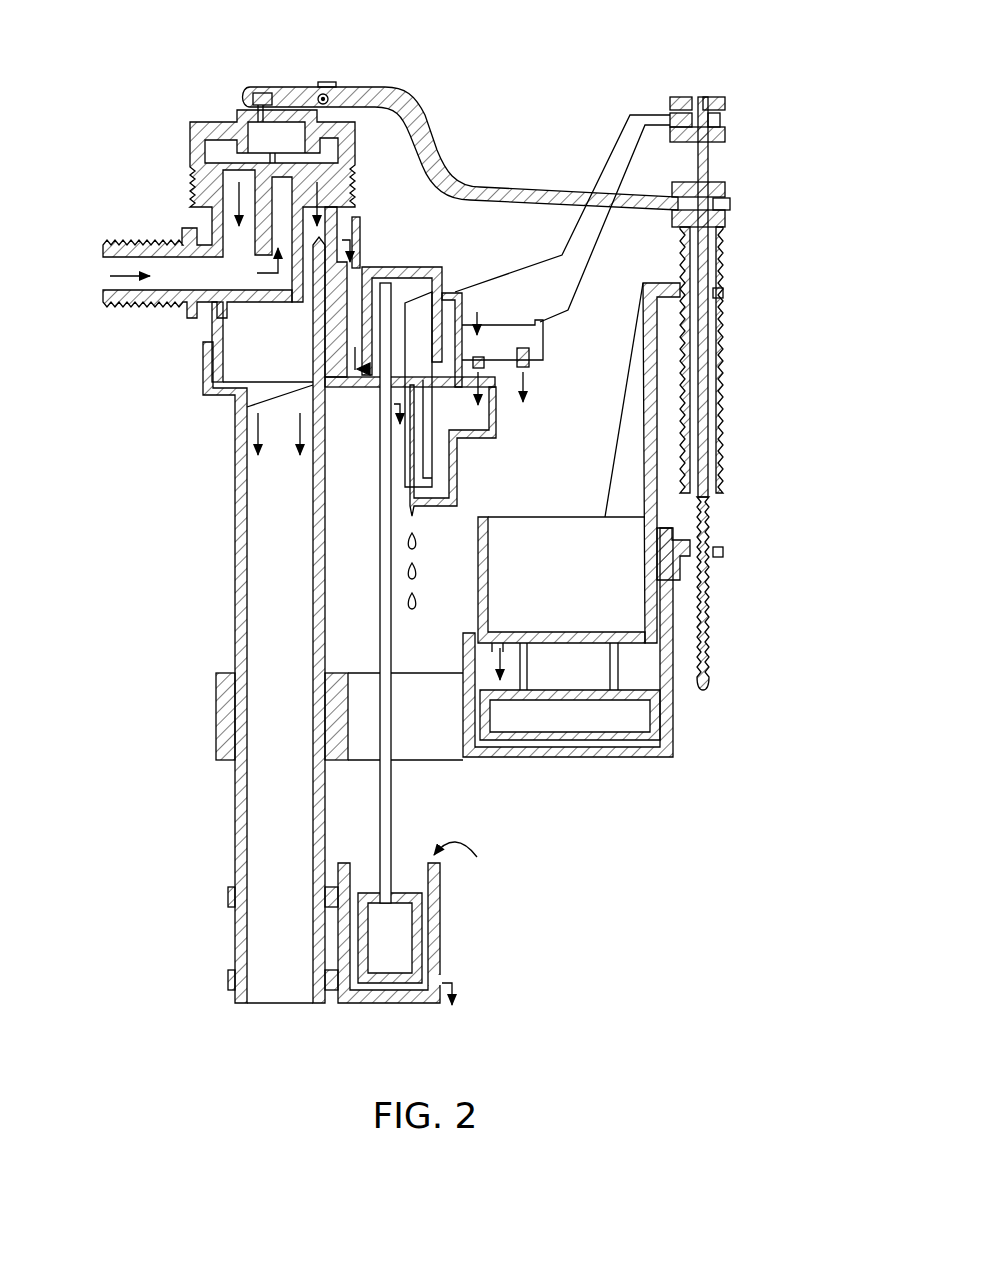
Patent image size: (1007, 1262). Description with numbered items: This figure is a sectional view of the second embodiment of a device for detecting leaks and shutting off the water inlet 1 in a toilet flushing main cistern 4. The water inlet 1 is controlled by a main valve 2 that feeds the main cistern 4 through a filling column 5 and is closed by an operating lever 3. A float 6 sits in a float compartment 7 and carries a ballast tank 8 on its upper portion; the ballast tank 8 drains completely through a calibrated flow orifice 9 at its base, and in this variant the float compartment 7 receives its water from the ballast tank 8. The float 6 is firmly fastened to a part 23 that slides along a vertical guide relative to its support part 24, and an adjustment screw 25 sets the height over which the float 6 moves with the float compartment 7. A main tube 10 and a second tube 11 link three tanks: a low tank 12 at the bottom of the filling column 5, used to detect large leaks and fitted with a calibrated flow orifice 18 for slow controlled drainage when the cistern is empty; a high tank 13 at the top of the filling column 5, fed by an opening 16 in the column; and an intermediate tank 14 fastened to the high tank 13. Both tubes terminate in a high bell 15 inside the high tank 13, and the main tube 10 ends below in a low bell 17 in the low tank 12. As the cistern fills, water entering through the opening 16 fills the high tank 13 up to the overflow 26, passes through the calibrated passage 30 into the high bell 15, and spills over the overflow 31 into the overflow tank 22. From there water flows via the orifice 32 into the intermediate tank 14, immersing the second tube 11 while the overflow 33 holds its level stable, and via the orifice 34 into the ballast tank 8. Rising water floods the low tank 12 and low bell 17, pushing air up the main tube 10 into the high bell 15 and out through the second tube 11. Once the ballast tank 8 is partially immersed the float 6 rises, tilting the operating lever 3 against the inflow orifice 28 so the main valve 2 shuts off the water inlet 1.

The water inlet 1 is at (83, 283).
The main valve 2 is at (215, 157).
The operating lever 3 is at (404, 110).
The main cistern 4 is at (143, 708).
The filling column 5 is at (240, 573).
The float 6 is at (618, 720).
The float compartment 7 is at (560, 757).
The ballast tank 8 is at (557, 588).
The calibrated flow orifice 9 is at (500, 645).
The main tube 10 is at (390, 778).
The second tube 11 is at (423, 478).
The low tank 12 is at (433, 883).
The high tank 13 is at (480, 312).
The intermediate tank 14 is at (455, 480).
The high bell 15 is at (400, 267).
The opening 16 is at (337, 240).
The low bell 17 is at (417, 932).
The calibrated flow orifice 18 is at (442, 980).
The overflow tank 22 is at (545, 335).
The part 23 is at (725, 295).
The support part 24 is at (680, 270).
The adjustment screw 25 is at (708, 100).
The overflow 26 is at (352, 310).
The inflow orifice 28 is at (255, 108).
The calibrated passage 30 is at (368, 372).
The overflow 31 is at (455, 300).
The orifice 32 is at (487, 372).
The overflow 33 is at (407, 423).
The orifice 34 is at (527, 372).